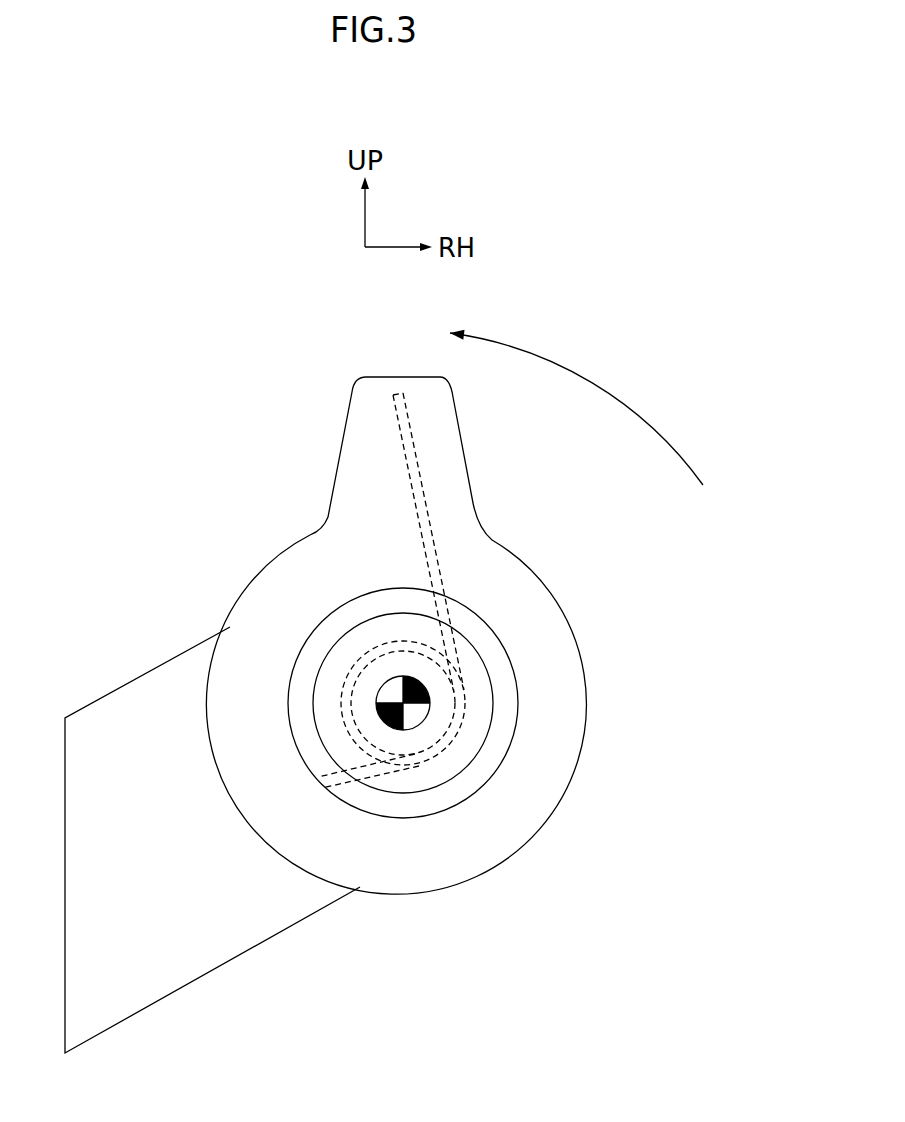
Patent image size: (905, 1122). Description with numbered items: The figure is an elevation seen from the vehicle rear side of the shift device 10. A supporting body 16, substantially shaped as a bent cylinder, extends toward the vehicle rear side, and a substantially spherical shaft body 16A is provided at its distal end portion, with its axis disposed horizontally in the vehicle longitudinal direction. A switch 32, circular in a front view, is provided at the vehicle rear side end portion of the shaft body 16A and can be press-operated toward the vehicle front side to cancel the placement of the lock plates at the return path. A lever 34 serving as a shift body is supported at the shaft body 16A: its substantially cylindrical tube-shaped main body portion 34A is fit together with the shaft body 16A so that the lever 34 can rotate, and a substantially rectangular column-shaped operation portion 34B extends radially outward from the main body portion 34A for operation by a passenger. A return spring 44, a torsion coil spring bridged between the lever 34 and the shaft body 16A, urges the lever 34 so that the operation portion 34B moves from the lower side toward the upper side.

The shift device 10 is at (200, 438).
The supporting body 16 is at (133, 681).
The shaft body 16A is at (433, 802).
The switch 32 is at (475, 720).
The lever 34 is at (262, 577).
The main body portion 34A is at (558, 652).
The operation portion 34B is at (443, 453).
The return spring 44 is at (427, 497).